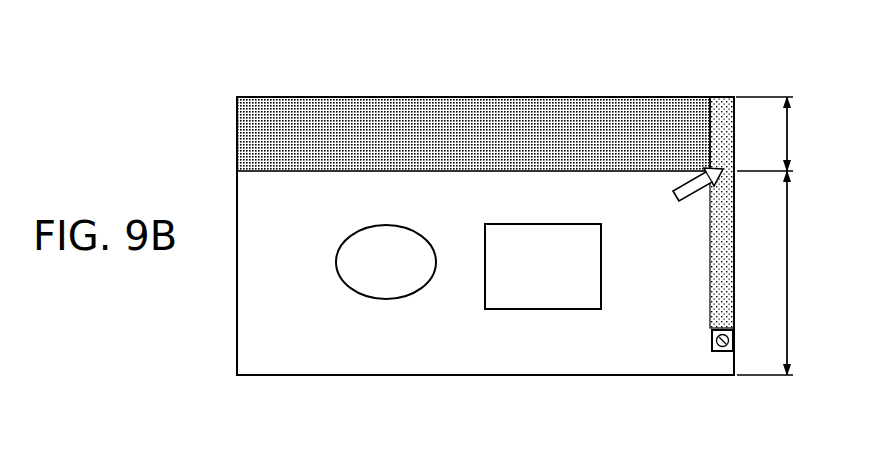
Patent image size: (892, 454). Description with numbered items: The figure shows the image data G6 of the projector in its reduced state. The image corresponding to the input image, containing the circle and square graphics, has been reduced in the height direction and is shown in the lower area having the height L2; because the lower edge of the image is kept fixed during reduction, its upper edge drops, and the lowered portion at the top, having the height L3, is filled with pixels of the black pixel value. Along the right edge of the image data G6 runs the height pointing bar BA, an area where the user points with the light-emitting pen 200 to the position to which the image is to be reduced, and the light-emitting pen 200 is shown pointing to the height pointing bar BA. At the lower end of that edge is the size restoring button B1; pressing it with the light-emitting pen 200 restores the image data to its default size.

The image data G6 is at (614, 71).
The height pointing bar BA is at (723, 96).
The size restoring button B1 is at (725, 353).
The light-emitting pen 200 is at (692, 189).
The lowered portion L3 is at (780, 134).
The height of reduced image data L2 is at (780, 273).